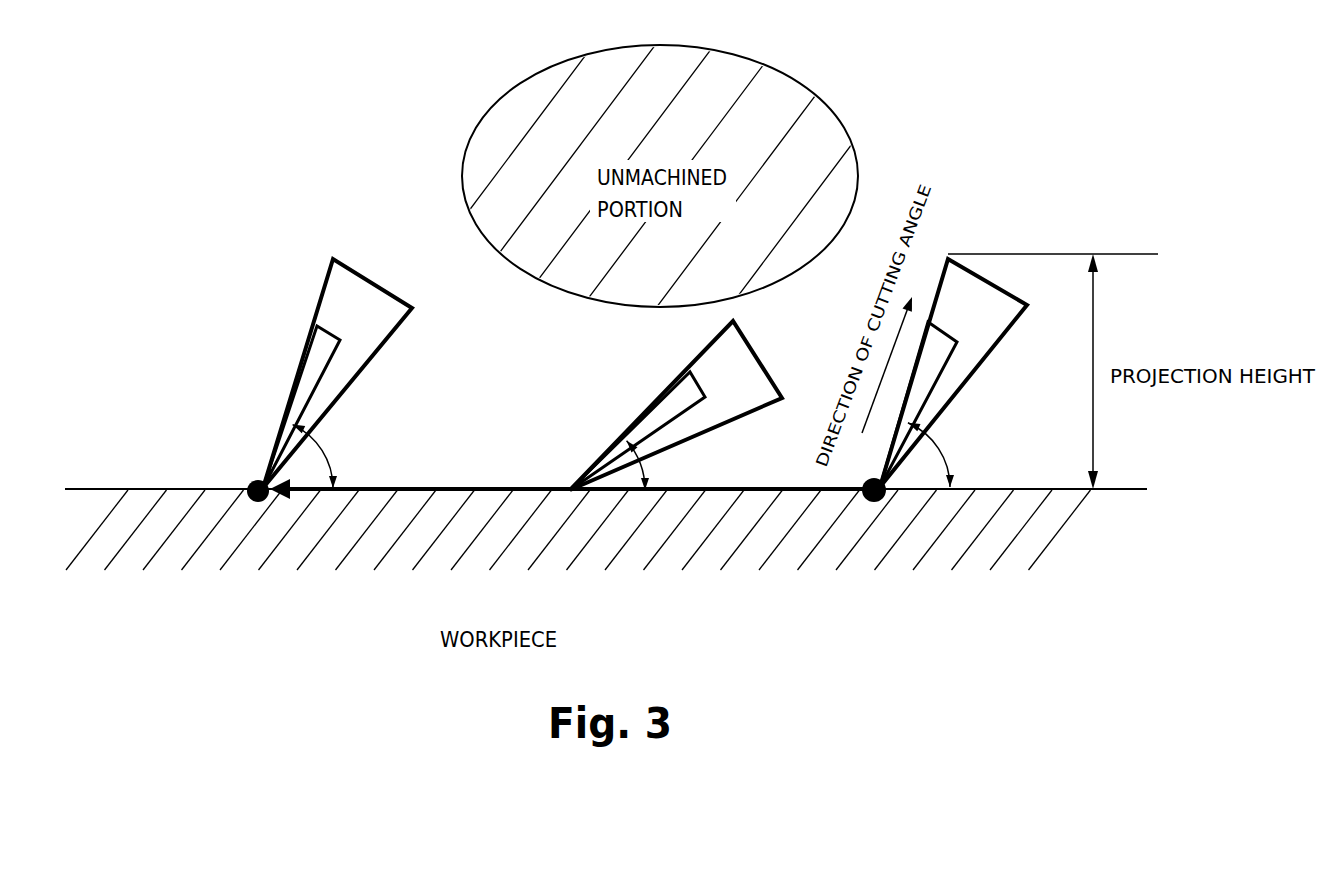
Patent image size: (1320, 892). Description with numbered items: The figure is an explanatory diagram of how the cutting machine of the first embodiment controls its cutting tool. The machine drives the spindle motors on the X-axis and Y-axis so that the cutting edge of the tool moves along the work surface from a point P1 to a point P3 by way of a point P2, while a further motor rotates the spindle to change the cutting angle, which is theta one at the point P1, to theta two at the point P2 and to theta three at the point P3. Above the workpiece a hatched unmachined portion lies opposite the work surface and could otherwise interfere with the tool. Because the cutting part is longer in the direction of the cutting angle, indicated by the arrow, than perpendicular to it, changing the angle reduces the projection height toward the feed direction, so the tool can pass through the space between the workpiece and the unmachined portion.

The point P1 is at (936, 415).
The point P2 is at (673, 446).
The point P3 is at (315, 415).